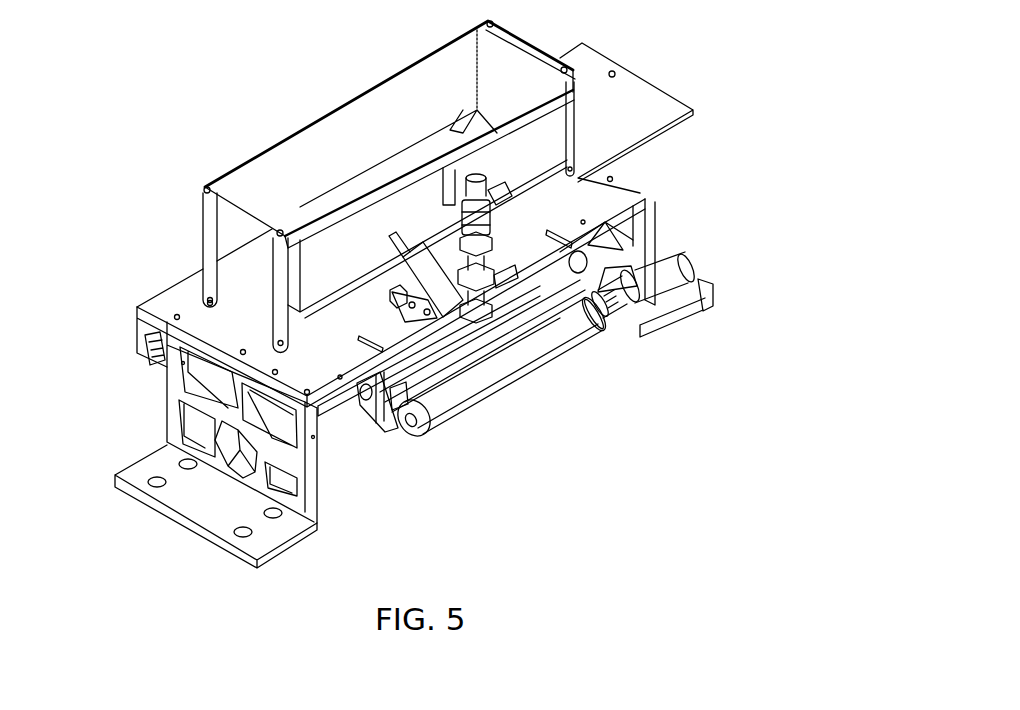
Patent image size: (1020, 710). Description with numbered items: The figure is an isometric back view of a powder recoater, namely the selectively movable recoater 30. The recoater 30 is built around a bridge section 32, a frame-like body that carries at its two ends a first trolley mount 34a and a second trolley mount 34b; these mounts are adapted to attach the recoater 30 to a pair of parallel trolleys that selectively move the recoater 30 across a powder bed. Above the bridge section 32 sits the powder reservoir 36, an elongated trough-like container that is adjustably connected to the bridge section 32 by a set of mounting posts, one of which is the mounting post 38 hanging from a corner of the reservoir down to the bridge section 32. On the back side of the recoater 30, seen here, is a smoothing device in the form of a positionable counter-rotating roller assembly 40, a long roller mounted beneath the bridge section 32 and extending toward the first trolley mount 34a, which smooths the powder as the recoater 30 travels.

The selectively movable recoater 30 is at (703, 23).
The bridge section 32 is at (617, 200).
The first trolley mount 34a is at (697, 296).
The second trolley mount 34b is at (170, 470).
The powder reservoir 36 is at (277, 148).
The mounting post 38 is at (277, 288).
The positionable counter-rotating roller assembly 40 is at (558, 385).